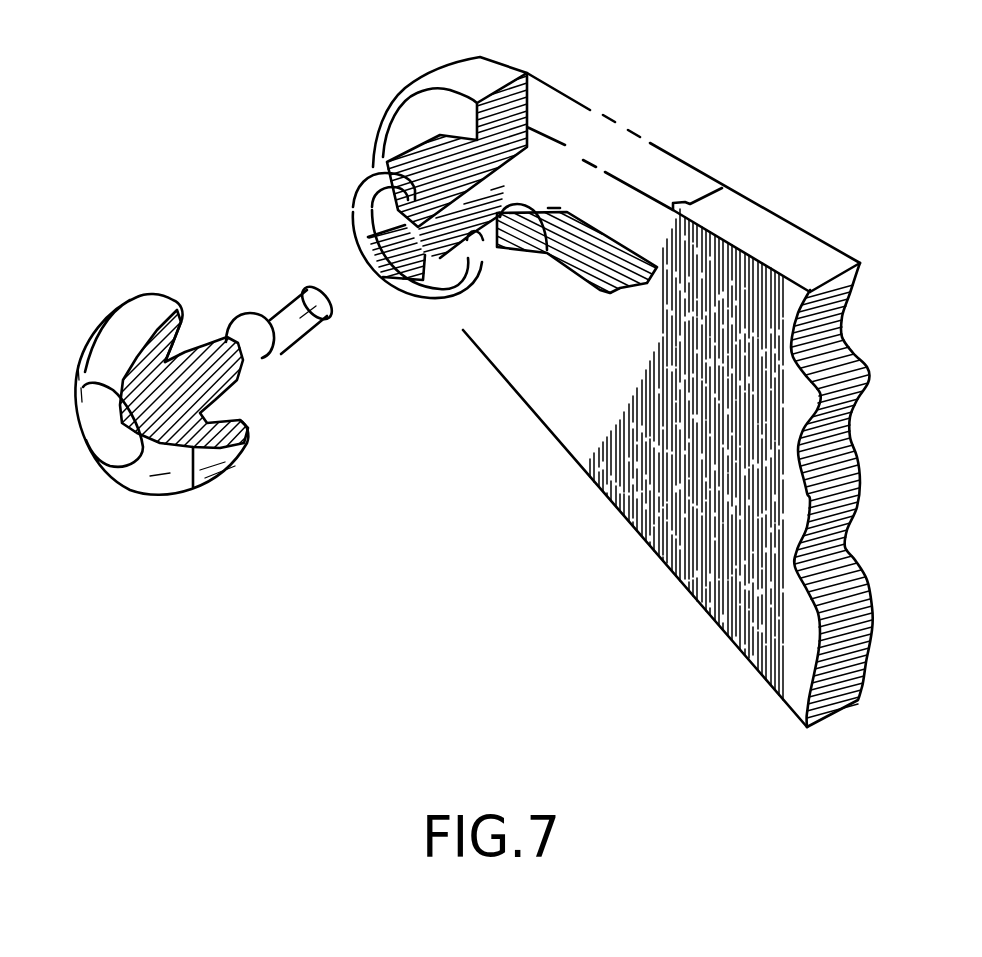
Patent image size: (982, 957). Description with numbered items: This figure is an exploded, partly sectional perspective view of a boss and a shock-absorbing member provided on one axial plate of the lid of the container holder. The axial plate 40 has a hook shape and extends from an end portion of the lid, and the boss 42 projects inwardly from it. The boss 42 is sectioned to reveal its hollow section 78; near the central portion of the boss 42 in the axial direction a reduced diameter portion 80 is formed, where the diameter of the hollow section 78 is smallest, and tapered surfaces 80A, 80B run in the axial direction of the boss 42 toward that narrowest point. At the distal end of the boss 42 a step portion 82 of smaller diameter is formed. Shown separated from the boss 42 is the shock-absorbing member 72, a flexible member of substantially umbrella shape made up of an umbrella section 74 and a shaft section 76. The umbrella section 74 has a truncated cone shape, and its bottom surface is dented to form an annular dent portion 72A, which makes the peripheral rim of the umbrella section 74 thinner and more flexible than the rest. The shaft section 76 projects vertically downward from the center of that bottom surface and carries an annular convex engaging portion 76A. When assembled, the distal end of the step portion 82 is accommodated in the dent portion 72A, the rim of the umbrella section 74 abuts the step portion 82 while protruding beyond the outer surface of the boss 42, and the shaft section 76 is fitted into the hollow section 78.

The axial plate 40 is at (600, 433).
The boss 42 is at (423, 160).
The shock-absorbing member 72 is at (267, 480).
The dent portion 72A is at (185, 332).
The umbrella section 74 is at (167, 470).
The shaft section 76 is at (303, 330).
The engaging portion 76A is at (246, 320).
The hollow section 78 is at (552, 212).
The reduced diameter portion 80 is at (475, 228).
The tapered surface 80A is at (410, 287).
The tapered surface 80B is at (543, 225).
The step portion 82 is at (370, 227).